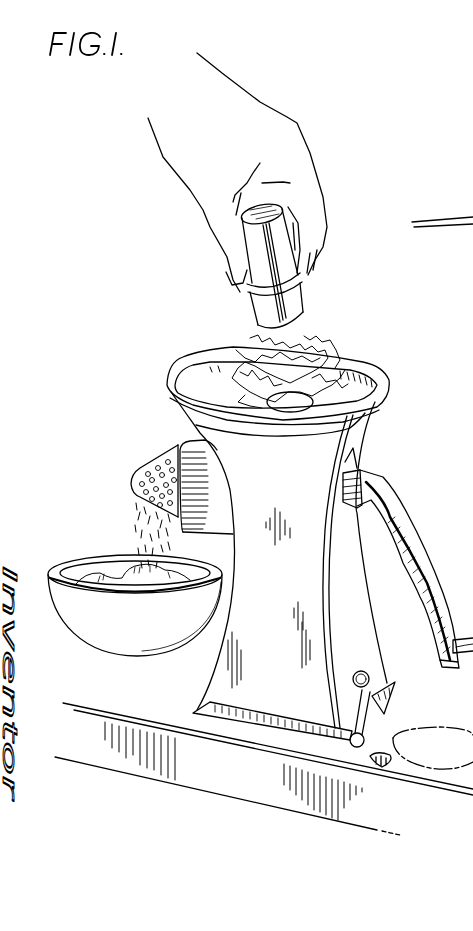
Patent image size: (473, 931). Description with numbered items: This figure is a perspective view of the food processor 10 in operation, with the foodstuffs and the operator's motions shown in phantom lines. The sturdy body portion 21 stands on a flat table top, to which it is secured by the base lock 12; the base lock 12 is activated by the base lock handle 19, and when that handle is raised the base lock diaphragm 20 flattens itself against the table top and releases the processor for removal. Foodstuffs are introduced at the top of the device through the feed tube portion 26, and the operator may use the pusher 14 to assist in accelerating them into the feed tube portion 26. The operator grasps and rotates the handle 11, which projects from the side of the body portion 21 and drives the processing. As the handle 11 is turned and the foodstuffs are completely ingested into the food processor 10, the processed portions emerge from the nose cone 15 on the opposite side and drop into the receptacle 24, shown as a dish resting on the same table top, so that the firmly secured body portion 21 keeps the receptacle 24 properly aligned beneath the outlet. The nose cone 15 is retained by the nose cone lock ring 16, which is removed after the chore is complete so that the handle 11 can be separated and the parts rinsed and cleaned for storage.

The food processor 10 is at (390, 330).
The handle 11 is at (437, 582).
The base lock 12 is at (380, 721).
The pusher 14 is at (307, 302).
The nose cone 15 is at (137, 470).
The nose cone lock ring 16 is at (186, 443).
The base lock handle 19 is at (380, 687).
The base lock diaphragm 20 is at (236, 728).
The body portion 21 is at (347, 607).
The receptacle 24 is at (117, 640).
The feed tube portion 26 is at (300, 397).